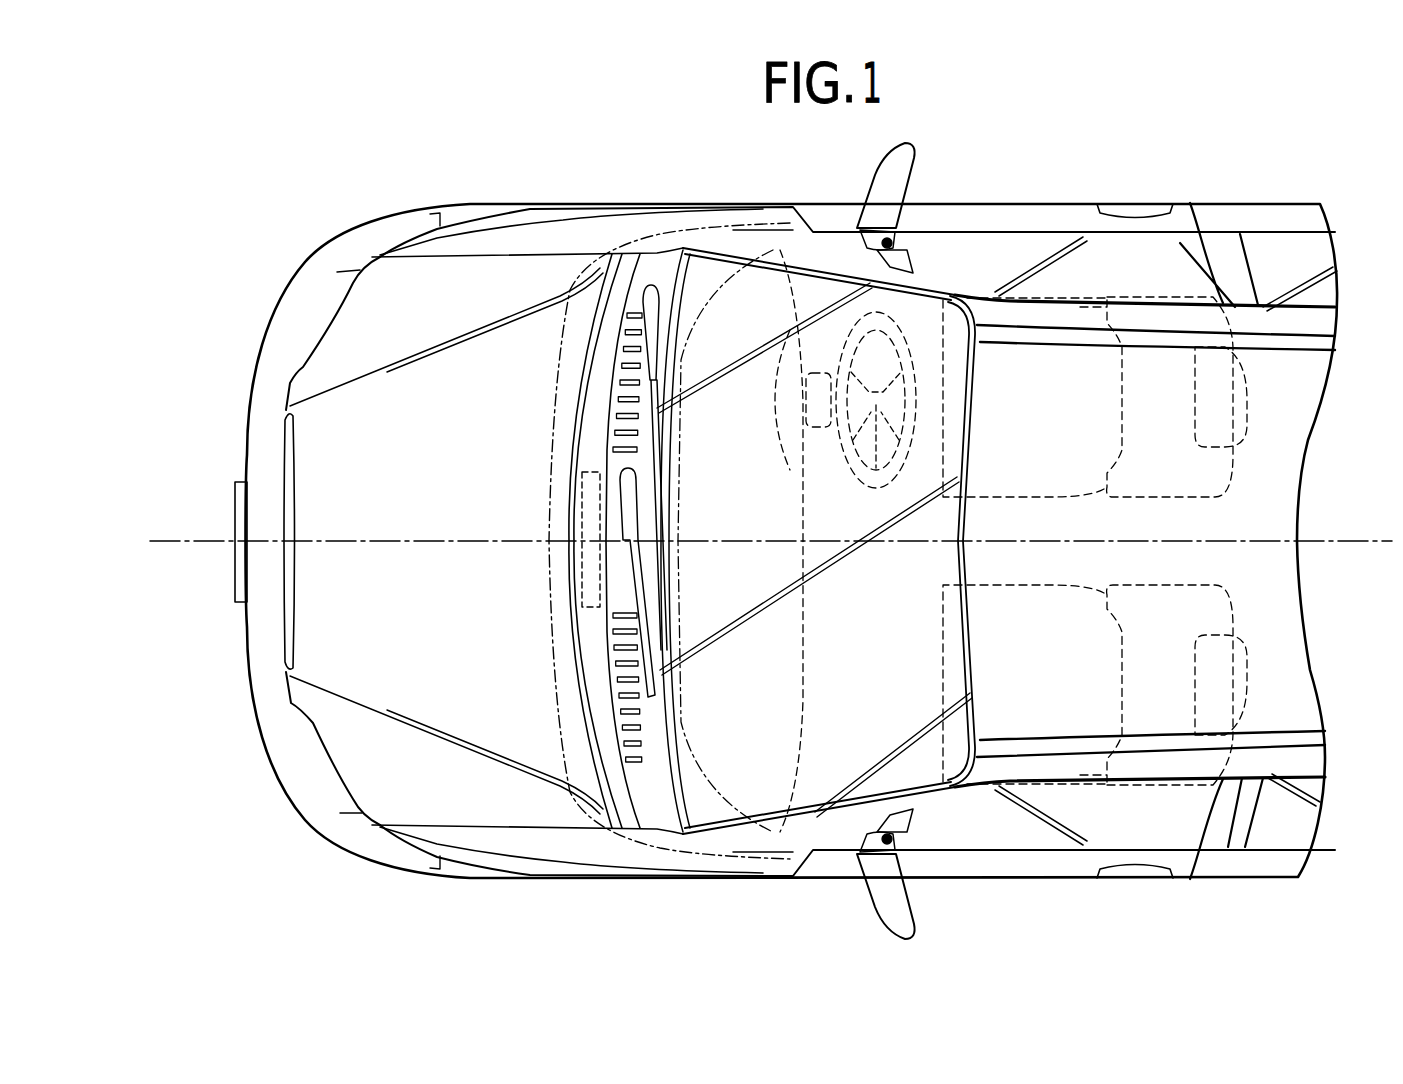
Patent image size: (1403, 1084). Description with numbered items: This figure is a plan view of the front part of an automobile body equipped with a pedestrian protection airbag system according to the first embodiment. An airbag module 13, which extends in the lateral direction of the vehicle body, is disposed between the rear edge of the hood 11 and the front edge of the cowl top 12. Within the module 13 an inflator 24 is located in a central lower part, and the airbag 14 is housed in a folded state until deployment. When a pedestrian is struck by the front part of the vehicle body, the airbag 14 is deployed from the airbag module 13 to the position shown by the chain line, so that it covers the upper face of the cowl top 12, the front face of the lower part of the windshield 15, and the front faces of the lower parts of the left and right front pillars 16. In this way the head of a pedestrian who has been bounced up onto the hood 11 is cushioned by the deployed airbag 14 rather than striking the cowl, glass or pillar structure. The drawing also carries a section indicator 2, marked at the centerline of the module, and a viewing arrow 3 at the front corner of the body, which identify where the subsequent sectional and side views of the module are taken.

The hood 11 is at (443, 287).
The cowl top 12 is at (620, 597).
The airbag module 13 is at (576, 392).
The airbag 14 is at (545, 594).
The windshield 15 is at (903, 603).
The front pillars 16 is at (828, 262).
The inflator 24 is at (578, 492).
The section line II-II 2 is at (526, 530).
The view direction arrow III 3 is at (261, 820).